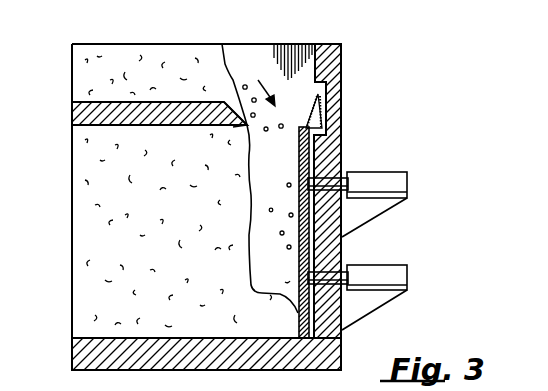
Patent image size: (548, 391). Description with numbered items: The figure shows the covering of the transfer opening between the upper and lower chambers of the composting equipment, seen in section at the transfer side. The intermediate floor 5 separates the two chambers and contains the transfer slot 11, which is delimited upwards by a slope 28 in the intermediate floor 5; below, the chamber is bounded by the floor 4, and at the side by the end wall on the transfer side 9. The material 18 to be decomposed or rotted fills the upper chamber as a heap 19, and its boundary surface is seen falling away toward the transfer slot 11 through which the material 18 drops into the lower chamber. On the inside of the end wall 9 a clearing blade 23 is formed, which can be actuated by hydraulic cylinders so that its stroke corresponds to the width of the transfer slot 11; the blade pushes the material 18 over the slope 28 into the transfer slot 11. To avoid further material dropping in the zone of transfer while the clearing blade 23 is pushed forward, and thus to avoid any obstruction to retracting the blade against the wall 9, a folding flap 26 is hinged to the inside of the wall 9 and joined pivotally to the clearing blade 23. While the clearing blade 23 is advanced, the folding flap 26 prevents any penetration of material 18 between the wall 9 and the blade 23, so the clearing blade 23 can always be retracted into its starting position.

The floor 4 is at (84, 355).
The intermediate floor 5 is at (82, 116).
The end wall on the transfer side 9 is at (343, 250).
The transfer slot 11 is at (267, 138).
The material to be decomposed or rotted 18 is at (88, 72).
The heap 19 is at (234, 80).
The clearing blade 23 is at (298, 268).
The folding flap 26 is at (322, 112).
The slope 28 is at (233, 128).